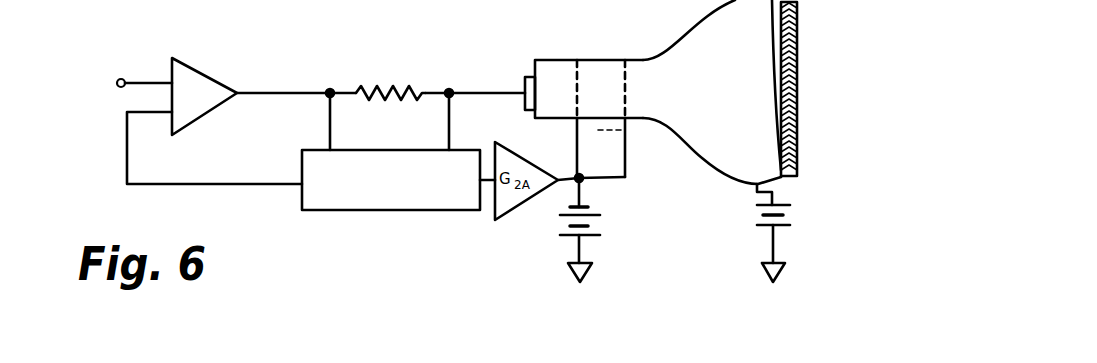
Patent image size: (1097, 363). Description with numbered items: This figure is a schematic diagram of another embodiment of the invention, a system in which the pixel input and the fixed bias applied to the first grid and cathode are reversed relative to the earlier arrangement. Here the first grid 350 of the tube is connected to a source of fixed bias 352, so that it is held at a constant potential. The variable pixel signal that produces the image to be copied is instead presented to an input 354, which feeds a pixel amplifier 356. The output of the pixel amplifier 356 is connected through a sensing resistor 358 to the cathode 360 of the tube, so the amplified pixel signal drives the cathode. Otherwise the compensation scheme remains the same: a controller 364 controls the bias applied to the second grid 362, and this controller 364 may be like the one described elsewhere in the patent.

The first grid 350 is at (583, 74).
The source of fixed bias 352 is at (598, 236).
The input 354 is at (121, 78).
The pixel amplifier 356 is at (223, 82).
The sensing resistor 358 is at (395, 85).
The cathode 360 is at (491, 90).
The second grid 362 is at (632, 78).
The controller 364 is at (390, 211).